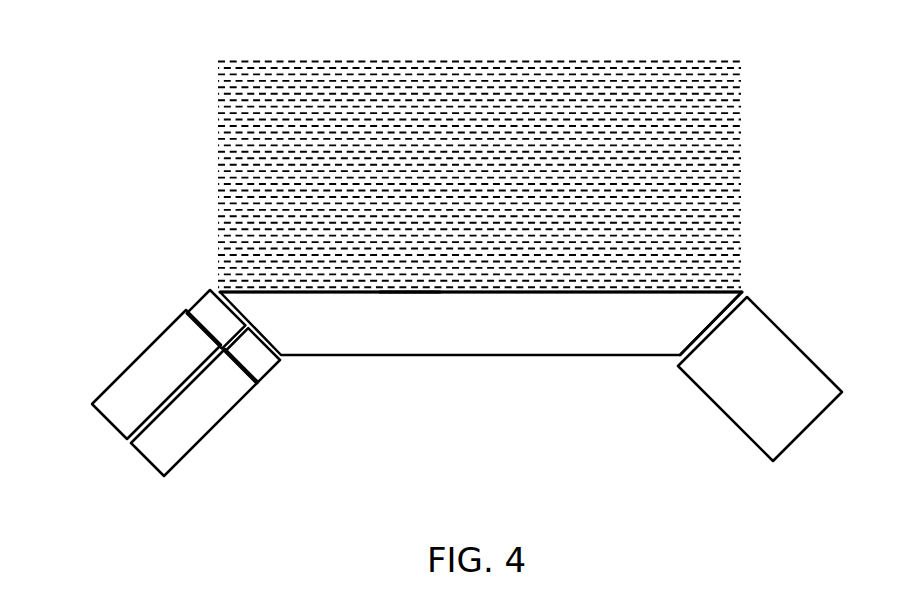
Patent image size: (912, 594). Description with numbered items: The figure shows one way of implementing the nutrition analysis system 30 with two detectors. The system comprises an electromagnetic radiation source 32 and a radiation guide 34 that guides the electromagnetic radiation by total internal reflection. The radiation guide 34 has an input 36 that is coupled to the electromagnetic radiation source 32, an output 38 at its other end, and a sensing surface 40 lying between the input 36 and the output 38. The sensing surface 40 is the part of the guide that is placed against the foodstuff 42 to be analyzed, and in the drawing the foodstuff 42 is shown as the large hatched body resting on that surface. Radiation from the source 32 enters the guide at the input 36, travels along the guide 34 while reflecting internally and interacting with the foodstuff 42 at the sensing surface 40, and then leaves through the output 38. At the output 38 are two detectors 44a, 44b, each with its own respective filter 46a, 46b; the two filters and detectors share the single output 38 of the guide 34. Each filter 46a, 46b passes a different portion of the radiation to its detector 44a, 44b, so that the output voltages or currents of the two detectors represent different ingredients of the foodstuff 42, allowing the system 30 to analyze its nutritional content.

The nutrition analysis system 30 is at (786, 128).
The electromagnetic radiation source 32 is at (812, 360).
The radiation guide 34 is at (508, 355).
The input 36 is at (737, 302).
The output 38 is at (267, 303).
The sensing surface 40 is at (410, 293).
The foodstuff 42 is at (477, 154).
The detector 44a is at (133, 360).
The detector 44b is at (198, 443).
The filter 46a is at (205, 292).
The filter 46b is at (273, 368).